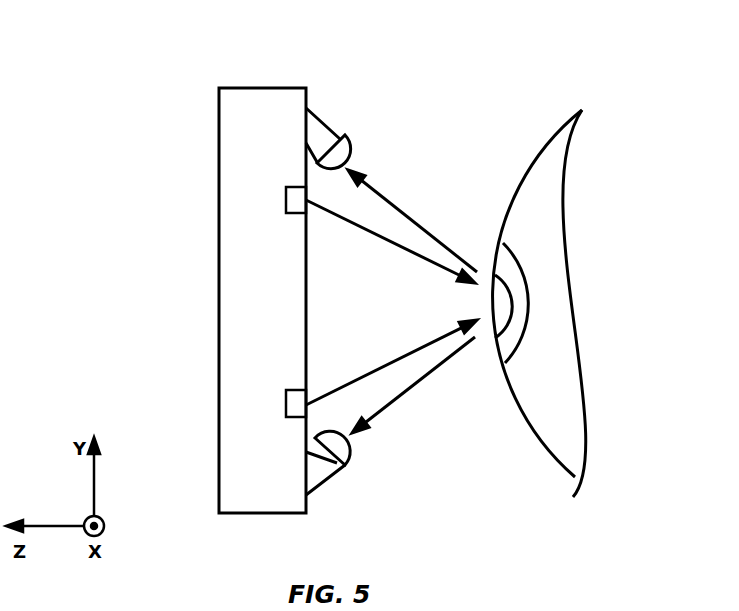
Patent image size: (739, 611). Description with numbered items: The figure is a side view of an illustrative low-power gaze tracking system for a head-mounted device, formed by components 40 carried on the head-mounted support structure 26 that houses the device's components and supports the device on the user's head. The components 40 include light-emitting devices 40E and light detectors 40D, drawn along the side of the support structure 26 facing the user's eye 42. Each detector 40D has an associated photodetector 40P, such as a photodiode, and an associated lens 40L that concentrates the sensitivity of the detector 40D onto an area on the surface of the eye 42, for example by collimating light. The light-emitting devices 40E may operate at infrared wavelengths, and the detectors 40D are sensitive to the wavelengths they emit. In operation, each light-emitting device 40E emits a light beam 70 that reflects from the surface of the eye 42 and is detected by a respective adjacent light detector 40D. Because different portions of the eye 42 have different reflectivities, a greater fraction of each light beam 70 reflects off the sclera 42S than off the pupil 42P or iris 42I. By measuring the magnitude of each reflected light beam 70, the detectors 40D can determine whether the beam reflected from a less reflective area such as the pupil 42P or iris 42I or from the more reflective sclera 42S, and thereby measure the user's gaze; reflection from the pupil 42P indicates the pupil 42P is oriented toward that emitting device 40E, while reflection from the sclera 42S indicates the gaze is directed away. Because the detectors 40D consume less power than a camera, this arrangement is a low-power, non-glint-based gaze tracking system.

The head-mounted support structure 26 is at (268, 293).
The components of the low-power gaze tracking system 40 is at (268, 322).
The light-emitting device 40E is at (286, 199).
The light detector 40D is at (268, 304).
The photodetector 40P is at (312, 135).
The lens 40L is at (333, 168).
The light beam 70 is at (410, 217).
The eye 42 is at (566, 294).
The sclera 42S is at (553, 193).
The iris 42I is at (520, 259).
The pupil 42P is at (502, 310).